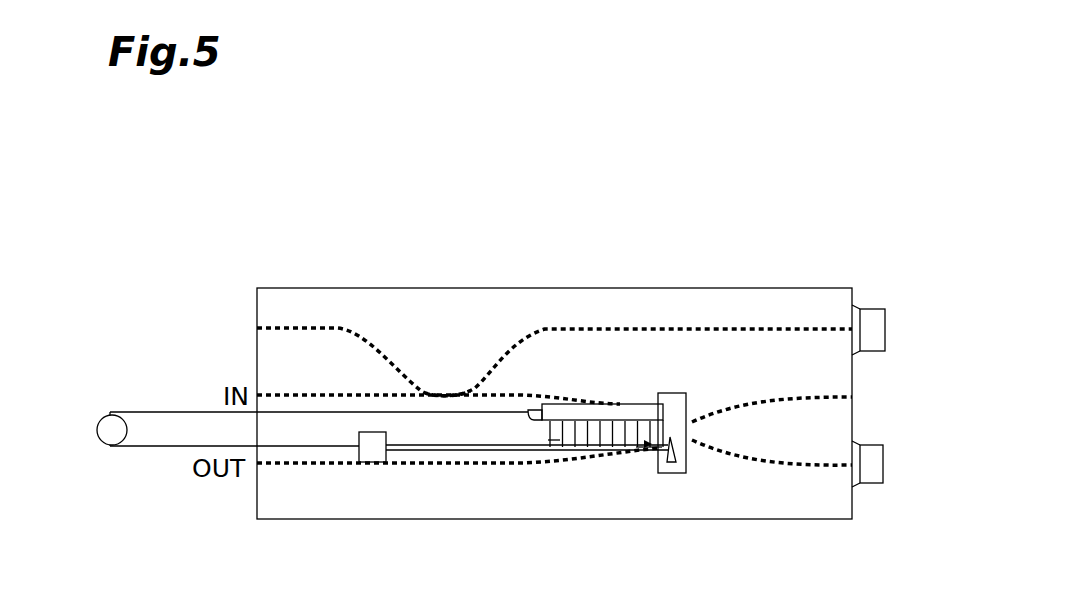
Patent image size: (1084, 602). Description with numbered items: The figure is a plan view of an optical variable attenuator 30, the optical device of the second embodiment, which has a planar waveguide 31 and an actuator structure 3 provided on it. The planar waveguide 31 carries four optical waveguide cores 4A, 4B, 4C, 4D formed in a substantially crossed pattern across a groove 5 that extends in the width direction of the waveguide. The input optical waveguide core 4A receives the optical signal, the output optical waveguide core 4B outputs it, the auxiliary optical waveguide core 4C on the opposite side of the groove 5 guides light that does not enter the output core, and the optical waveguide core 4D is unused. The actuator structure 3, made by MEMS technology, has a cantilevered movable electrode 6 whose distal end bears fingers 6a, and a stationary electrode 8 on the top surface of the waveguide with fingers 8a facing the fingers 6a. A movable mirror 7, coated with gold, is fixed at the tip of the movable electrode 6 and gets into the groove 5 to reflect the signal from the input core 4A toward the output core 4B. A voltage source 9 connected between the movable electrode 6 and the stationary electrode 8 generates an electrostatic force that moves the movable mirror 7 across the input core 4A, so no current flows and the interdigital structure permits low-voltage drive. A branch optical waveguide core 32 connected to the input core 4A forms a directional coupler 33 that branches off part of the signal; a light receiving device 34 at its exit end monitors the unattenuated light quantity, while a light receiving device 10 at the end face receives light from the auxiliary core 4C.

The optical variable attenuator 30 is at (660, 200).
The planar waveguide 31 is at (751, 300).
The branch optical waveguide core 32 is at (333, 328).
The directional coupler 33 is at (451, 385).
The light receiving device 34 is at (872, 317).
The input optical waveguide core 4A is at (307, 395).
The output optical waveguide core 4B is at (418, 467).
The auxiliary optical waveguide core 4C is at (801, 467).
The unused optical waveguide core 4D is at (787, 400).
The stationary electrode 8 is at (629, 410).
The fingers 8a is at (532, 422).
The movable electrode 6 is at (478, 452).
The fingers 6a is at (548, 440).
The actuator structure 3 is at (640, 470).
The groove 5 is at (682, 473).
The movable mirror 7 is at (671, 462).
The voltage source 9 is at (97, 429).
The light receiving device 10 is at (877, 462).